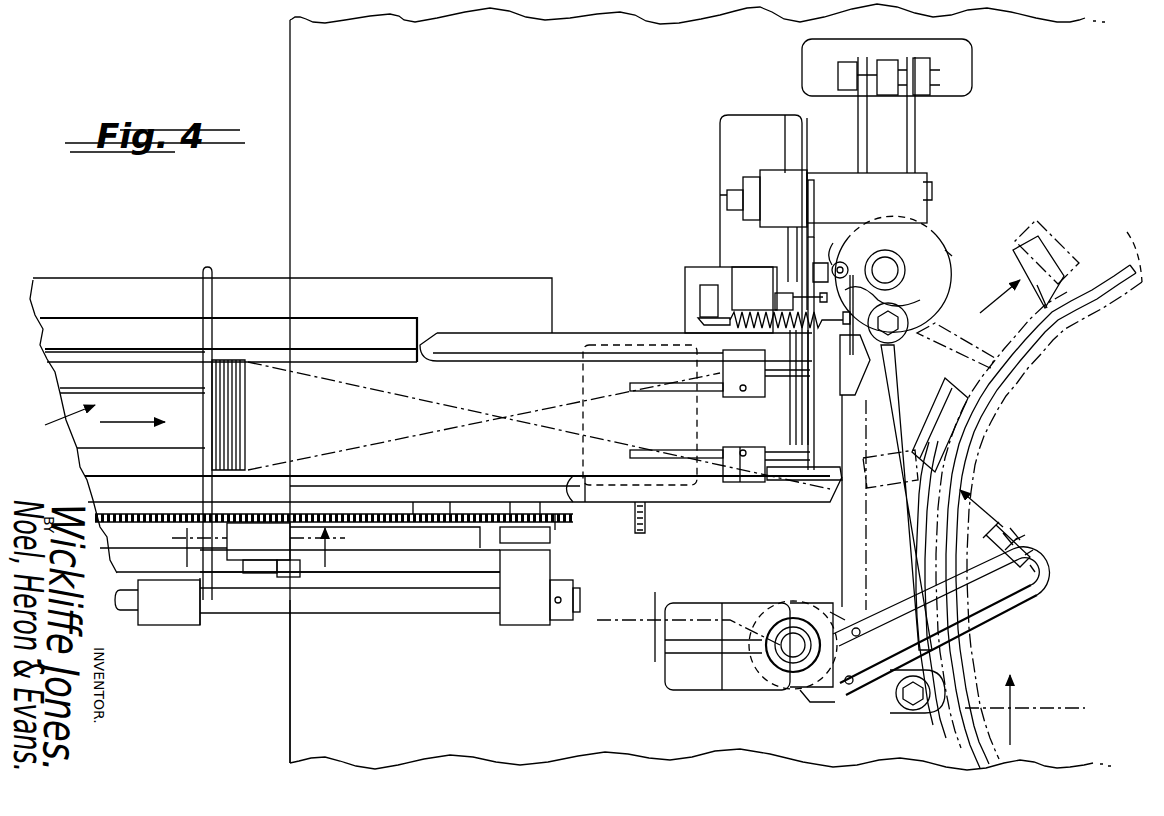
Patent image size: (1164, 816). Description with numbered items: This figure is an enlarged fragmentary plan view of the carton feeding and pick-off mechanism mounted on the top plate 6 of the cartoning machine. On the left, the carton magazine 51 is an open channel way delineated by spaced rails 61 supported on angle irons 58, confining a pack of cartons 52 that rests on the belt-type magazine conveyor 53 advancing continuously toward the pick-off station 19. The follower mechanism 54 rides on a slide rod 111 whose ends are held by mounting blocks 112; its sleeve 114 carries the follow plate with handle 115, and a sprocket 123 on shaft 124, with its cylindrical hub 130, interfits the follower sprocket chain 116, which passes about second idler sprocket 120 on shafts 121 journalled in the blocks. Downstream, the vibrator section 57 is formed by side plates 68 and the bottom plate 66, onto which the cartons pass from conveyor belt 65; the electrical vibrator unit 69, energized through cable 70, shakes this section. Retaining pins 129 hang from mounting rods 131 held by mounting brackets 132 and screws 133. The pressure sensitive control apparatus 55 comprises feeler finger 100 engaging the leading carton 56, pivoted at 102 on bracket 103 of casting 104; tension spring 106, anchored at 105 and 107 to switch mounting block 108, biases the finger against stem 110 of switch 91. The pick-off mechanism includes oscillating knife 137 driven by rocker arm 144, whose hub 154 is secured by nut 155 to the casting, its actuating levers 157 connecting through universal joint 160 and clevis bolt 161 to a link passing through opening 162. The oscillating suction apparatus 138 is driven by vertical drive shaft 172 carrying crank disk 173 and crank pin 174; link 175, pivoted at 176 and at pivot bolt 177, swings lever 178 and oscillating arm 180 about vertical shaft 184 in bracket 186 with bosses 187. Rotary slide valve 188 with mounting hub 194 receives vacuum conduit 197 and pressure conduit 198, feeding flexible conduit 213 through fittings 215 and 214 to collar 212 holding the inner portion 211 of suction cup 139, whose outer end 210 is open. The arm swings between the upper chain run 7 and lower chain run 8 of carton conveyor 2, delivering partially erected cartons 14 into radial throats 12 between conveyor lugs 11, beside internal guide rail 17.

The carton conveyor 2 is at (1127, 192).
The top plate 6 is at (290, 712).
The upper chain run 7 is at (1146, 292).
The lower chain run 8 is at (256, 545).
The conveyor lugs 11 is at (1062, 240).
The radial throats 12 is at (960, 404).
The partially erected cartons 14 is at (1040, 342).
The internal guide rail 17 is at (1136, 252).
The pick-off station 19 is at (790, 95).
The carton magazine 51 is at (118, 386).
The pack of cartons 52 is at (250, 424).
The magazine conveyor 53 is at (108, 426).
The follower mechanism 54 is at (262, 600).
The pressure sensitive control apparatus 55 is at (856, 303).
The leading carton 56 is at (815, 420).
The vibrator section 57 is at (545, 390).
The angle irons 58 is at (125, 298).
The magazine rails 61 is at (345, 345).
The conveyor belt 65 is at (188, 403).
The bottom plate 66 is at (95, 377).
The side plates 68 is at (512, 357).
The electrical vibrator unit 69 is at (583, 450).
The cable 70 is at (645, 521).
The switch 91 is at (782, 290).
The feeler finger 100 is at (898, 272).
The pivot 102 is at (880, 256).
The bracket 103 is at (845, 242).
The casting 104 is at (725, 146).
The spring anchor 105 is at (853, 342).
The tension spring 106 is at (753, 313).
The spring anchor 107 is at (700, 306).
The switch mounting block 108 is at (700, 268).
The switch stem 110 is at (842, 266).
The slide rod 111 is at (398, 600).
The mounting blocks 112 is at (521, 608).
The sleeve 114 is at (182, 606).
The handle 115 is at (213, 278).
The follower sprocket chain 116 is at (456, 526).
The second idler sprocket 120 is at (557, 526).
The shafts 121 is at (522, 508).
The sprocket 123 is at (288, 500).
The shaft 124 is at (262, 566).
The retaining pins 129 is at (802, 470).
The cylindrical hub 130 is at (285, 580).
The mounting rods 131 is at (655, 378).
The mounting brackets 132 is at (738, 360).
The screws 133 is at (745, 450).
The oscillating knife 137 is at (823, 222).
The oscillating suction apparatus 138 is at (1040, 594).
The suction cup 139 is at (1005, 531).
The rocker arm 144 is at (822, 210).
The hub 154 is at (895, 175).
The nut 155 is at (750, 198).
The actuating levers 157 is at (918, 122).
The universal joint 160 is at (885, 64).
The clevis bolt 161 is at (924, 62).
The opening 162 is at (972, 62).
The vertical drive shaft 172 is at (951, 256).
The crank disk 173 is at (957, 290).
The crank pin 174 is at (910, 324).
The link 175 is at (900, 516).
The pivot 176 is at (910, 356).
The pivot bolt 177 is at (932, 712).
The lever 178 is at (882, 705).
The oscillating arm 180 is at (990, 612).
The vertical shaft 184 is at (786, 613).
The bracket 186 is at (680, 682).
The bosses 187 is at (825, 611).
The rotary slide valve 188 is at (760, 674).
The mounting hub 194 is at (778, 690).
The vacuum conduit 197 is at (857, 628).
The pressure conduit 198 is at (848, 686).
The outer end of mouthpiece 210 is at (1003, 527).
The inner portion of mouthpiece 211 is at (1030, 541).
The collar 212 is at (1040, 556).
The flexible conduit 213 is at (988, 632).
The fitting 214 is at (1038, 571).
The fitting 215 is at (812, 700).